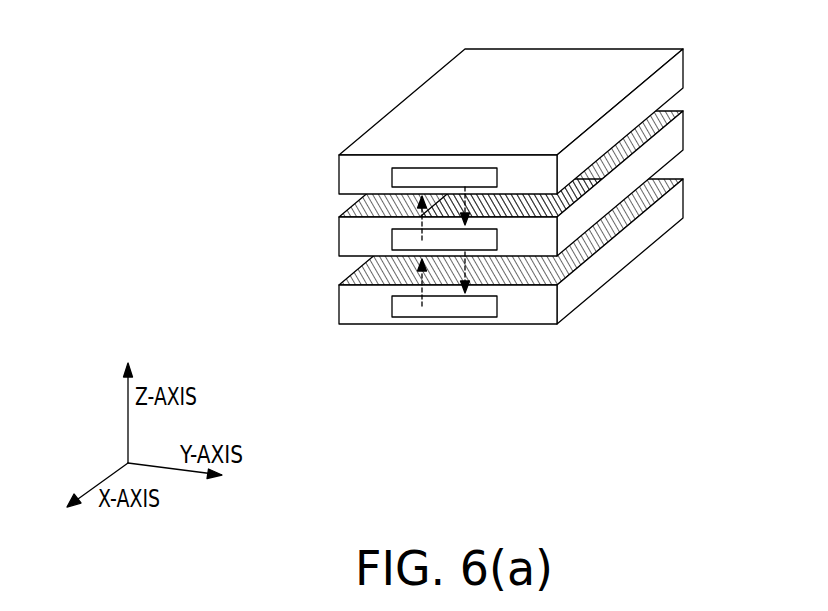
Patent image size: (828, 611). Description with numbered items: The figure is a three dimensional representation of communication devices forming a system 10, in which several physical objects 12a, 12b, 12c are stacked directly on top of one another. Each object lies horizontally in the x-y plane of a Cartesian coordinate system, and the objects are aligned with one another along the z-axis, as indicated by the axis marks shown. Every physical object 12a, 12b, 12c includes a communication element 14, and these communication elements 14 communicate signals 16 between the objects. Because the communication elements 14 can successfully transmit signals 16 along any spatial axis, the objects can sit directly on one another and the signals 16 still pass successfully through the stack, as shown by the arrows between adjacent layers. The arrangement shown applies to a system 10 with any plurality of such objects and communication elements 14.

The system 10 is at (542, 162).
The physical object 12a is at (683, 65).
The physical object 12b is at (683, 128).
The physical object 12c is at (683, 197).
The communication element 14 is at (392, 179).
The signal 16 is at (490, 205).